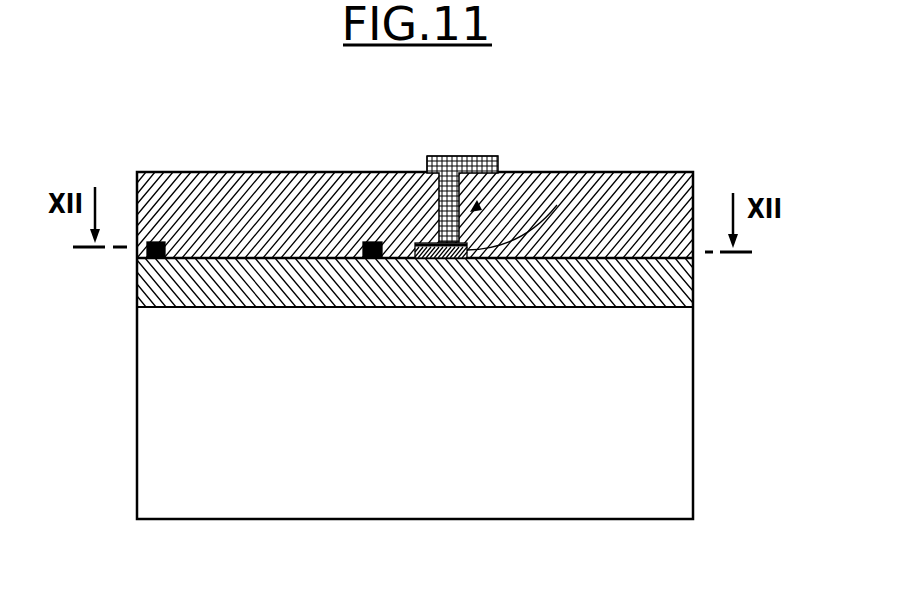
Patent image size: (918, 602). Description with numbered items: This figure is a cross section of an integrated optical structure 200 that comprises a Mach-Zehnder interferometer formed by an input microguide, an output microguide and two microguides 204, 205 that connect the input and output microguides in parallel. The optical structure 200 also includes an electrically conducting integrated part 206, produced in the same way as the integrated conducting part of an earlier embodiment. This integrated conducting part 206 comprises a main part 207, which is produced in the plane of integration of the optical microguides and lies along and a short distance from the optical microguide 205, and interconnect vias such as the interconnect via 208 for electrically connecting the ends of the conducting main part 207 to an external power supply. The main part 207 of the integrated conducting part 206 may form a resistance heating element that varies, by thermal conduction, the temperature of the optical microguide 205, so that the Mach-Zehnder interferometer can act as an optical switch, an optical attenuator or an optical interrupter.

The integrated optical structure 200 is at (713, 160).
The microguide 204 is at (158, 242).
The microguide 205 is at (377, 242).
The electrically conducting integrated part 206 is at (507, 173).
The main part 207 is at (592, 173).
The interconnect via 208 is at (442, 212).